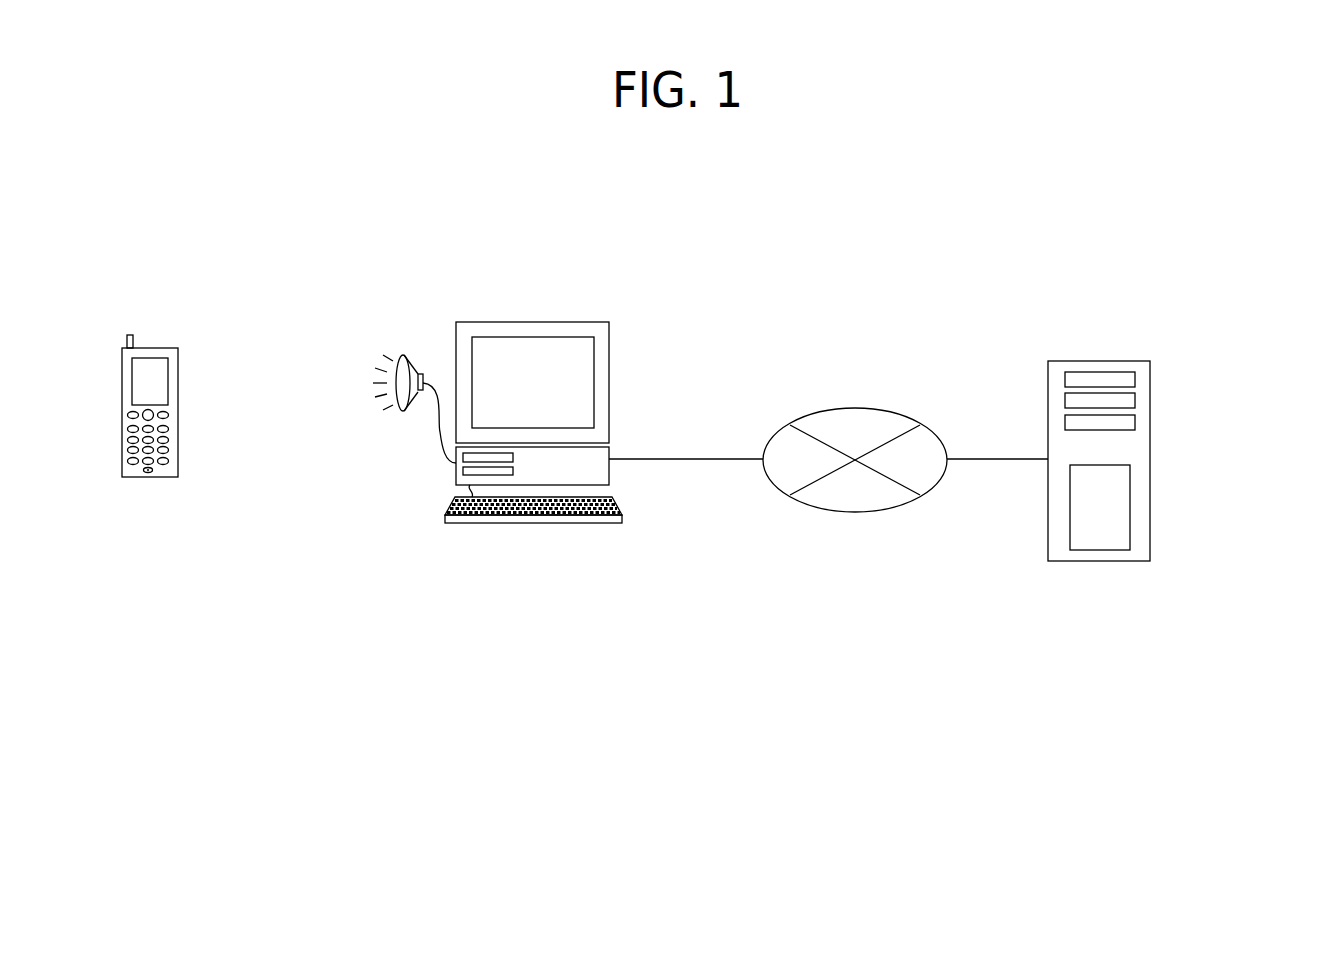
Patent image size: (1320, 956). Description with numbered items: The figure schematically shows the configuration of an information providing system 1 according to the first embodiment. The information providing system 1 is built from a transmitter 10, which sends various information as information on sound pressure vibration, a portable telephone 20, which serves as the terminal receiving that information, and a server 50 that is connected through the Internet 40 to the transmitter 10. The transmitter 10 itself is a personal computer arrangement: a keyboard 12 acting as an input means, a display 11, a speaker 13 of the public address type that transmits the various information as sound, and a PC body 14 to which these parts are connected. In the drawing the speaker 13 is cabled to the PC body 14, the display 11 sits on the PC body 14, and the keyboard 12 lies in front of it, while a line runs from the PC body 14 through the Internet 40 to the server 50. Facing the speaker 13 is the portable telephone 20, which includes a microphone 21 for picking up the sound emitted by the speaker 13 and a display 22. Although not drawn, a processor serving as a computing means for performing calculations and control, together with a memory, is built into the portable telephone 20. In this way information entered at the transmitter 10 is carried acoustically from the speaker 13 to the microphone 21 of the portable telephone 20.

The information providing system 1 is at (806, 219).
The transmitter 10 is at (570, 317).
The display 11 is at (600, 355).
The keyboard 12 is at (548, 523).
The speaker 13 is at (403, 356).
The PC body 14 is at (595, 458).
The portable telephone 20 is at (159, 344).
The microphone 21 is at (150, 477).
The display 22 is at (157, 382).
The Internet 40 is at (818, 512).
The server 50 is at (1098, 561).